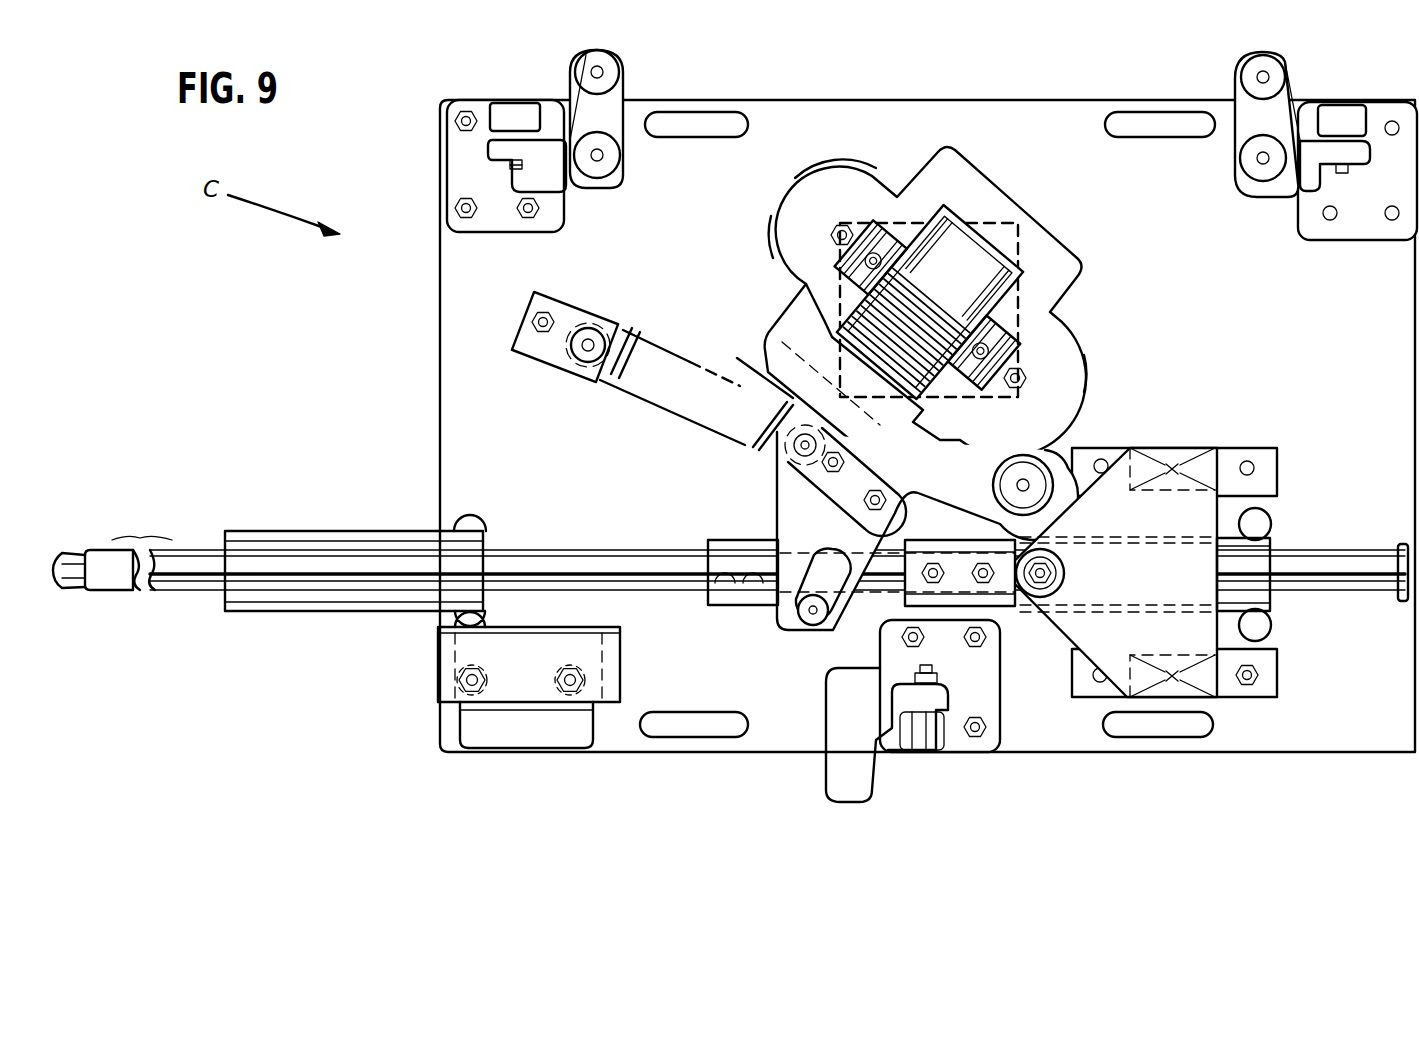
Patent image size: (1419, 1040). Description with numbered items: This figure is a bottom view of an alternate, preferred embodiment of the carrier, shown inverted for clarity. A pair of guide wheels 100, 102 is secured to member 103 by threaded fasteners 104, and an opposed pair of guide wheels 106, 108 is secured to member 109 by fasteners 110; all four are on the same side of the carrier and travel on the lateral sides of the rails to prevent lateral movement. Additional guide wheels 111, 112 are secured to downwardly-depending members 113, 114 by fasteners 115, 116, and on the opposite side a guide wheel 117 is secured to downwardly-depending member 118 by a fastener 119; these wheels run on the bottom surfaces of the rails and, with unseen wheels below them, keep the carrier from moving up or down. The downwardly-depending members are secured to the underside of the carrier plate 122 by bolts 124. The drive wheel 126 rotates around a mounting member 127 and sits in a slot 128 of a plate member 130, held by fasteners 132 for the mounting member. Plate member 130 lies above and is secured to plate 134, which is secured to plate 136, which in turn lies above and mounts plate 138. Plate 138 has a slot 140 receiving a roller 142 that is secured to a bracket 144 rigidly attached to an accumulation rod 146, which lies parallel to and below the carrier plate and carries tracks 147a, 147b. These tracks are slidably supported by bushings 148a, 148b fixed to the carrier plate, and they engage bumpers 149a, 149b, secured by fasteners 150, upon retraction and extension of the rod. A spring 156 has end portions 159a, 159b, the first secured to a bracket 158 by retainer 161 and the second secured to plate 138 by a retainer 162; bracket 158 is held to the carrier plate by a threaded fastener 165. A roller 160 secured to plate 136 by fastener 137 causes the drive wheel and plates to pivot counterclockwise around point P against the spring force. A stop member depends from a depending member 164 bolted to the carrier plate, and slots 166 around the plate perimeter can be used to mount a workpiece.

The guide wheel 100 is at (622, 72).
The guide wheel 102 is at (623, 163).
The member 103 is at (625, 105).
The threaded fasteners 104 is at (598, 66).
The guide wheel 106 is at (1238, 70).
The guide wheel 108 is at (1240, 150).
The member 109 is at (1238, 112).
The fasteners 110 is at (1263, 71).
The guide wheel 111 is at (513, 100).
The guide wheel 112 is at (1338, 105).
The downwardly-depending member 113 is at (492, 148).
The downwardly-depending member 114 is at (1370, 152).
The fastener 115 is at (510, 166).
The fastener 116 is at (1340, 176).
The guide wheel 117 is at (930, 750).
The downwardly-depending member 118 is at (1003, 735).
The fastener 119 is at (946, 664).
The carrier plate 122 is at (1252, 337).
The bolts 124 is at (465, 208).
The drive wheel 126 is at (947, 258).
The mounting member 127 is at (1022, 335).
The slot 128 is at (950, 222).
The plate member 130 is at (1063, 243).
The fasteners 132 is at (873, 255).
The plate 134 is at (843, 155).
The plate 136 is at (772, 338).
The fastener 137 is at (1020, 485).
The plate 138 is at (777, 478).
The slot 140 is at (808, 556).
The roller 142 is at (806, 624).
The bracket 144 is at (830, 633).
The accumulation rod 146 is at (548, 548).
The track 147a is at (290, 528).
The track 147b is at (1272, 545).
The bushing 148a is at (482, 506).
The bushing 148b is at (1272, 516).
The bumper 149a is at (712, 540).
The bumper 149b is at (955, 522).
The fasteners 150 is at (842, 565).
The spring 156 is at (670, 407).
The bracket 158 is at (560, 290).
The end portion 159a is at (588, 325).
The end portion 159b is at (746, 364).
The roller 160 is at (1066, 458).
The retainer 161 is at (588, 352).
The retainer 162 is at (790, 458).
The depending member 164 is at (1072, 648).
The threaded fastener 165 is at (540, 322).
The slots 166 is at (722, 112).
The point P is at (1016, 253).